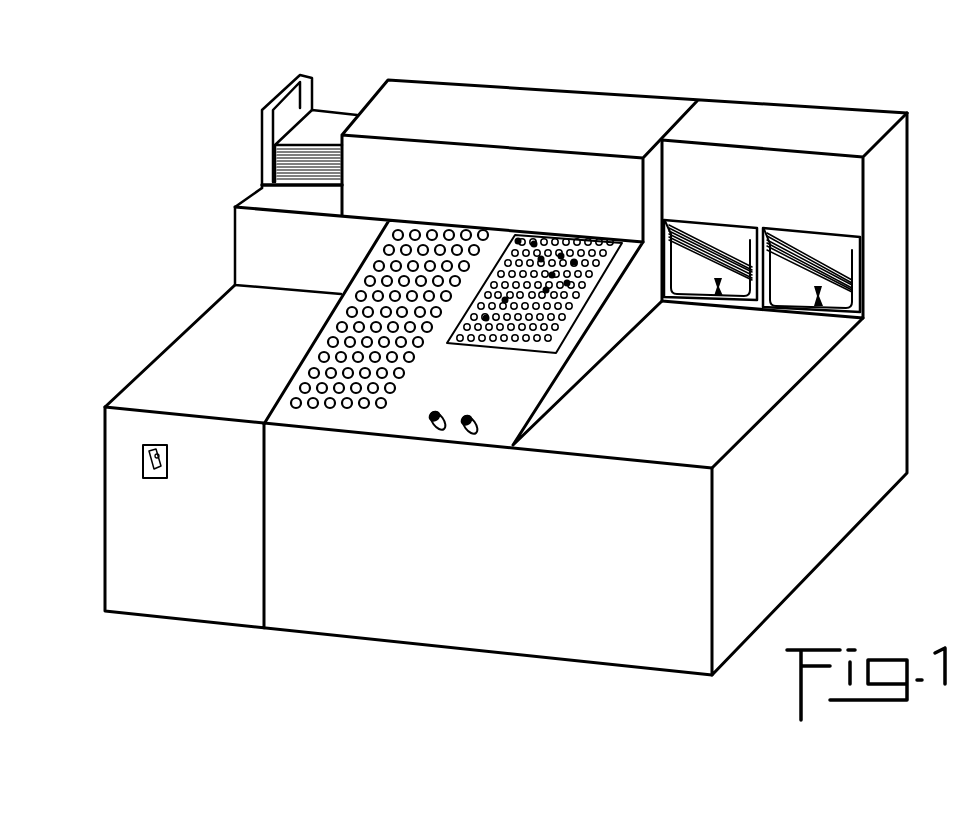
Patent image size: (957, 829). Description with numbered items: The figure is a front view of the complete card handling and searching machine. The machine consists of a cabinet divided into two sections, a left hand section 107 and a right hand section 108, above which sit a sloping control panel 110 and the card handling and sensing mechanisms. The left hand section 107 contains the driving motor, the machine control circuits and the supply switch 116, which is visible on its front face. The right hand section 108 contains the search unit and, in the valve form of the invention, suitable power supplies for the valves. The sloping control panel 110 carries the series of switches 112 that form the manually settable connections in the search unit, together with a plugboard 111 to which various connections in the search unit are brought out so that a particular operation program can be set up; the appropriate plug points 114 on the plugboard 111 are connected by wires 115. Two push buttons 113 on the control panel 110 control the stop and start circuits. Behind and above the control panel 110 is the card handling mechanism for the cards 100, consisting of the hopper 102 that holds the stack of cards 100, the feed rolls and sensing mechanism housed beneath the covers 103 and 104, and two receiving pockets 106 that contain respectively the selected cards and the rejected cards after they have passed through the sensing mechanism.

The cards 100 is at (286, 142).
The hopper 102 is at (311, 88).
The cover 103 is at (598, 82).
The cover 104 is at (810, 123).
The receiving pockets 106 is at (842, 254).
The left hand section of the cabinet 107 is at (113, 537).
The right hand section of the cabinet 108 is at (701, 570).
The sloping control panel 110 is at (383, 326).
The plugboard 111 is at (553, 240).
The switches 112 is at (378, 416).
The push buttons 113 is at (445, 430).
The plug points 114 is at (564, 338).
The wires 115 is at (572, 270).
The supply switch 116 is at (167, 469).